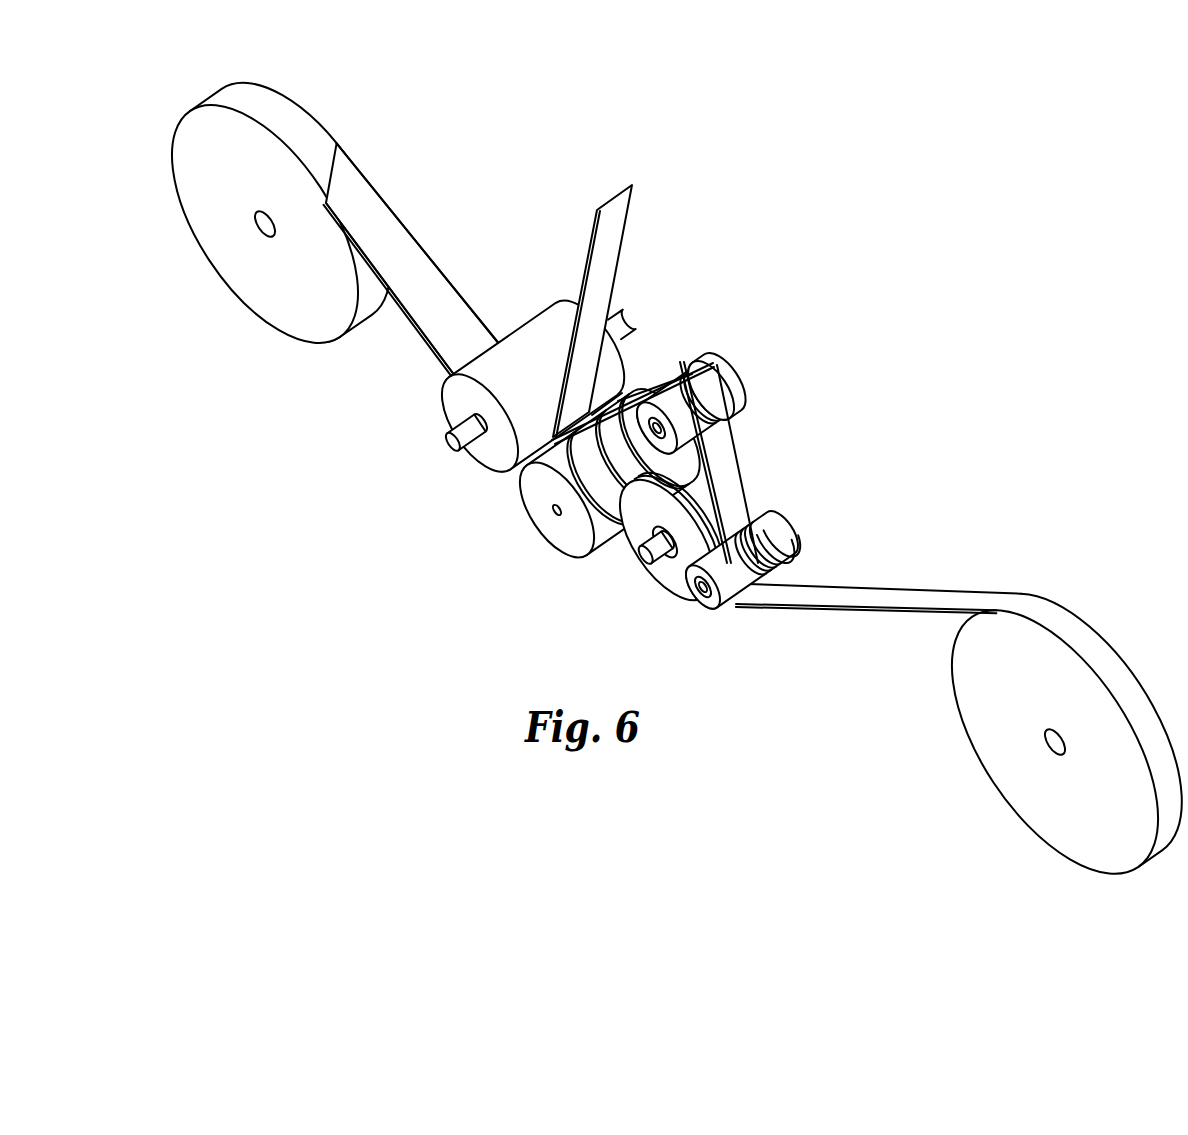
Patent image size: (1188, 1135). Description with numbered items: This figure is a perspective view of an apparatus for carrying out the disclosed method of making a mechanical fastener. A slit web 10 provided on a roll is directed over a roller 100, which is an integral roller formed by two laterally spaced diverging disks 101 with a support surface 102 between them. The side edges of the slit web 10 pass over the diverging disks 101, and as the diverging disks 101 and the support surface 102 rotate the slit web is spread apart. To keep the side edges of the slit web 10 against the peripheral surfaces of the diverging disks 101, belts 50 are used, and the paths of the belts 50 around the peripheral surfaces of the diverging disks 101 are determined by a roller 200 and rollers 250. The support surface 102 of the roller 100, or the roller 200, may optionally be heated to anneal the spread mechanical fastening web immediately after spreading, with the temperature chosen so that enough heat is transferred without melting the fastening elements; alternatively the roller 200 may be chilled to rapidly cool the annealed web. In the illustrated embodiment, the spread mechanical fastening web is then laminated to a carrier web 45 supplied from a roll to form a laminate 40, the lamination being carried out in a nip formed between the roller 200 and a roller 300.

The slit web 10 is at (993, 752).
The laminate 40 is at (630, 211).
The carrier web 45 is at (287, 323).
The belts 50 is at (713, 473).
The roller 100 is at (663, 568).
The diverging disks 101 is at (633, 540).
The support surface 102 is at (697, 510).
The roller 200 is at (555, 537).
The rollers 250 is at (710, 363).
The roller 300 is at (445, 416).